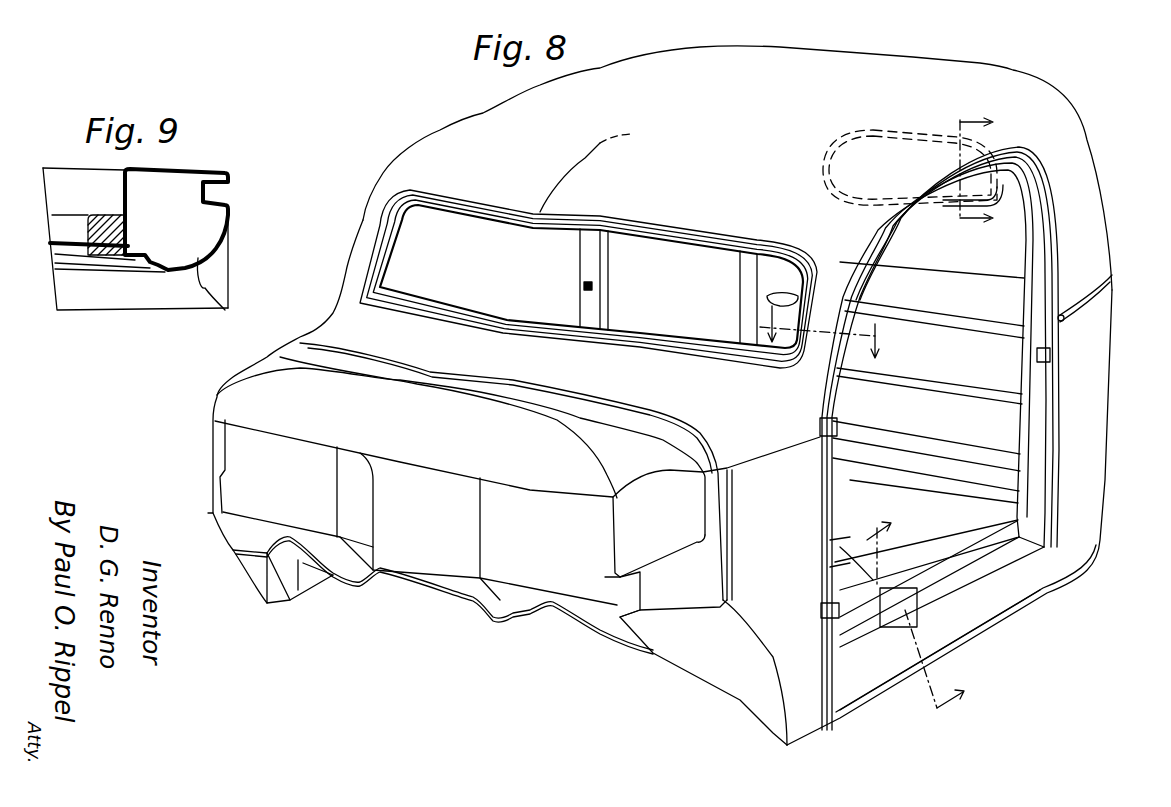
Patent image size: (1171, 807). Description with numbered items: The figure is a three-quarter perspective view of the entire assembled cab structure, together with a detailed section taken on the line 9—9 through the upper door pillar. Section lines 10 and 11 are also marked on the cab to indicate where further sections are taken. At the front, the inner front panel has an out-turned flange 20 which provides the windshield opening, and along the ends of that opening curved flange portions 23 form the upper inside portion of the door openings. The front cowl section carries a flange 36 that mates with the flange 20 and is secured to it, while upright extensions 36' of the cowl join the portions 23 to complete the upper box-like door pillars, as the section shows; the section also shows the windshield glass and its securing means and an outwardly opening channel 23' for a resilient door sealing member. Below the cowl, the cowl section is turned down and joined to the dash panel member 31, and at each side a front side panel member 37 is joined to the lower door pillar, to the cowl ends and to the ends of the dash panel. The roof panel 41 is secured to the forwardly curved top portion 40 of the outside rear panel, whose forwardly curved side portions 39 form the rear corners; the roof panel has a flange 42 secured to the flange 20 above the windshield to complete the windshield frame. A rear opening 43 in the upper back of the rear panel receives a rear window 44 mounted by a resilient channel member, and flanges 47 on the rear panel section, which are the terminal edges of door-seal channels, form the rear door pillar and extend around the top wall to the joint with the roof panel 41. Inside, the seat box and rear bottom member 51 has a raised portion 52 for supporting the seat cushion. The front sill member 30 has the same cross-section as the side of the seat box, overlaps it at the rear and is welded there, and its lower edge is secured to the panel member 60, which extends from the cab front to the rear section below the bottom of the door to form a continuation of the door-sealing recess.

In FIG. 8, the section line 9— 9 is at (825, 329).
In FIG. 8, the section line 10— 10 is at (971, 170).
In FIG. 8, the section line 11— 11 is at (919, 615).
In FIG. 9, the out-turned flange 20 is at (123, 192).
In FIG. 9, the curved flange portions 23 is at (176, 205).
In FIG. 9, the outwardly opening channel 23' is at (246, 186).
In FIG. 8, the front sill member 30 is at (867, 613).
In FIG. 8, the dash panel member 31 is at (518, 567).
In FIG. 8, the flange 36 is at (588, 279).
In FIG. 9, the flange 36 is at (107, 276).
In FIG. 8, the upright extensions 36' is at (617, 253).
In FIG. 9, the upright extensions 36' is at (226, 297).
In FIG. 8, the front side panel member 37 is at (812, 488).
In FIG. 8, the forwardly curved corner or side portions 39 is at (1098, 377).
In FIG. 8, the forwardly curved top portion 40 is at (1038, 90).
In FIG. 8, the roof panel 41 is at (662, 62).
In FIG. 8, the flange 42 is at (585, 218).
In FIG. 8, the rear opening 43 is at (943, 198).
In FIG. 8, the rear window 44 is at (983, 190).
In FIG. 8, the flanges 47 is at (1055, 433).
In FIG. 8, the seat box and rear bottom member 51 is at (928, 444).
In FIG. 8, the raised portion 52 is at (850, 567).
In FIG. 8, the panel member 60 is at (1012, 602).